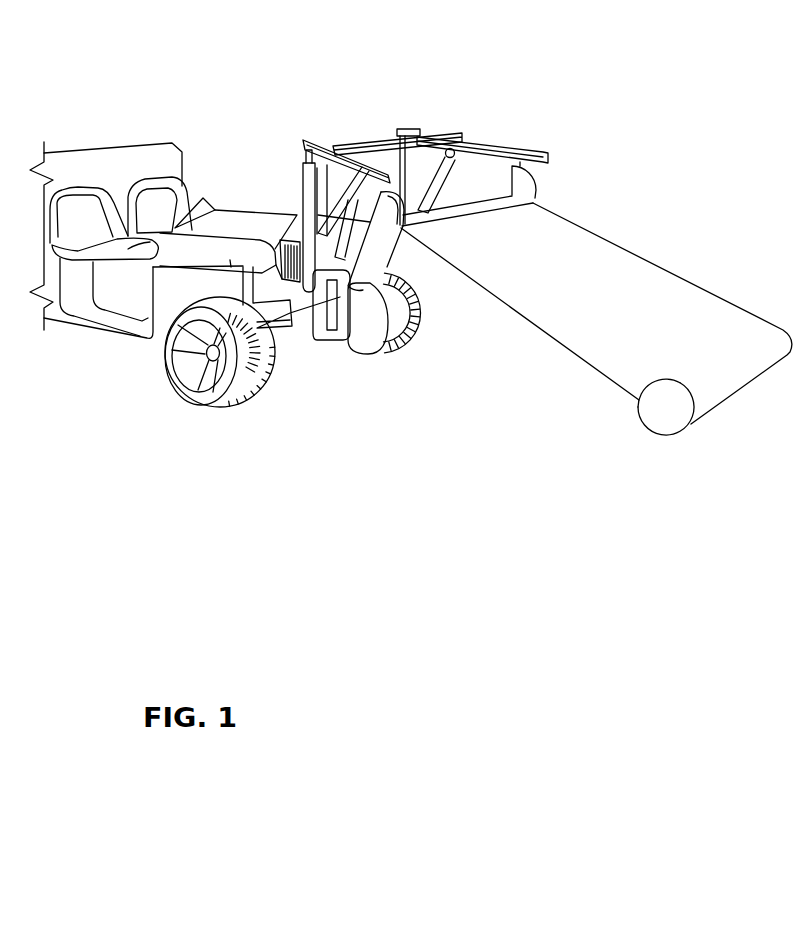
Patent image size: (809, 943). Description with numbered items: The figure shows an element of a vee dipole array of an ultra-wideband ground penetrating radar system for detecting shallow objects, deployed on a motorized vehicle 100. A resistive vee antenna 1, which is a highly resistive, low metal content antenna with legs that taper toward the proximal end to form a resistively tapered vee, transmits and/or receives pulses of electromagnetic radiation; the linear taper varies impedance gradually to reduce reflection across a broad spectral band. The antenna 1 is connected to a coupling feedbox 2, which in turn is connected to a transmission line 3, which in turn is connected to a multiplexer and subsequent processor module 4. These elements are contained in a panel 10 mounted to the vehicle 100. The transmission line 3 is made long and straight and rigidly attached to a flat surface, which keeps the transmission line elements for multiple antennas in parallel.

The vehicle 100 is at (122, 145).
The panel 10 is at (641, 290).
The resistive vee antenna 1 is at (654, 421).
The coupling feedbox 2 is at (638, 398).
The transmission line 3 is at (522, 306).
The multiplexer and subsequent processor module 4 is at (386, 206).